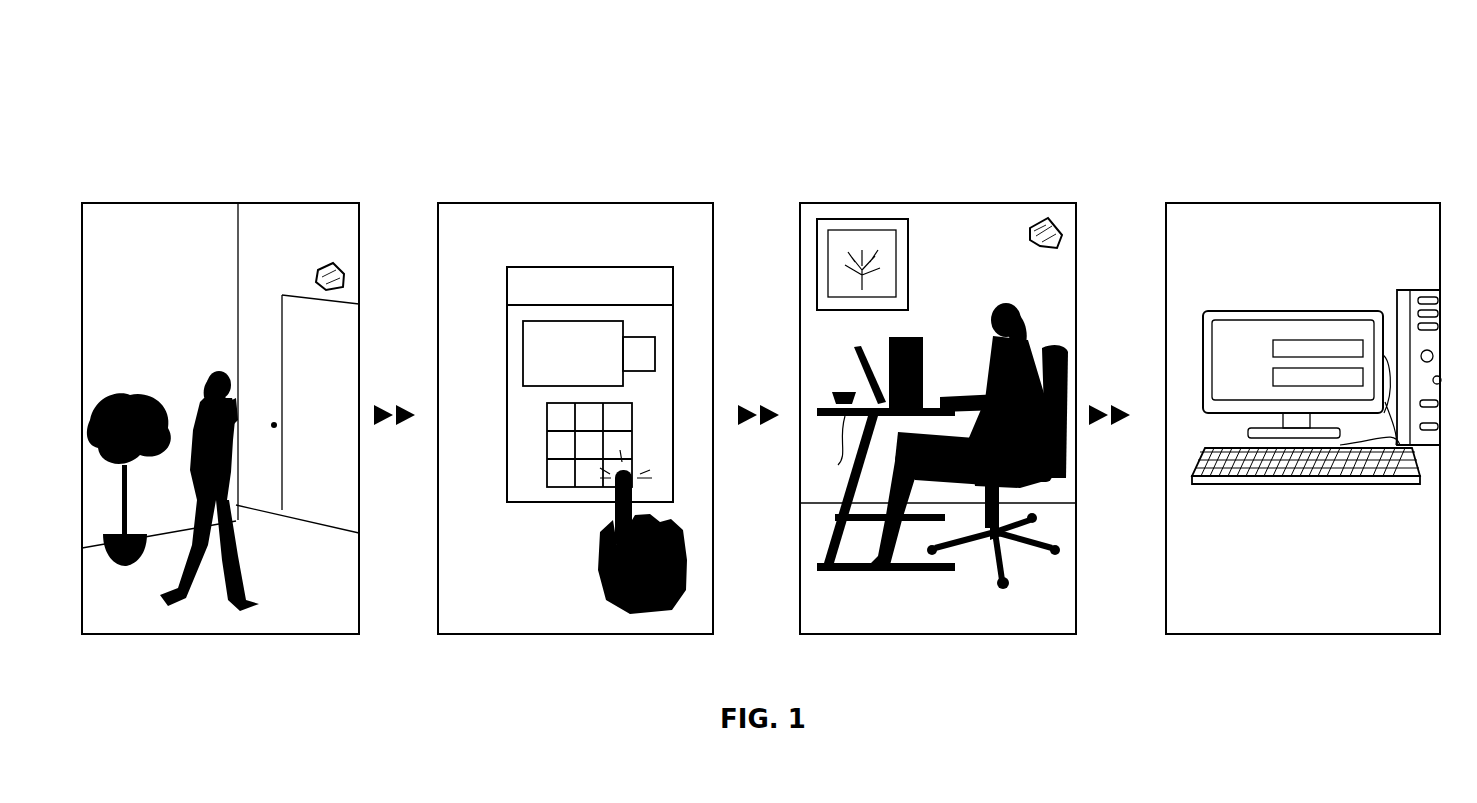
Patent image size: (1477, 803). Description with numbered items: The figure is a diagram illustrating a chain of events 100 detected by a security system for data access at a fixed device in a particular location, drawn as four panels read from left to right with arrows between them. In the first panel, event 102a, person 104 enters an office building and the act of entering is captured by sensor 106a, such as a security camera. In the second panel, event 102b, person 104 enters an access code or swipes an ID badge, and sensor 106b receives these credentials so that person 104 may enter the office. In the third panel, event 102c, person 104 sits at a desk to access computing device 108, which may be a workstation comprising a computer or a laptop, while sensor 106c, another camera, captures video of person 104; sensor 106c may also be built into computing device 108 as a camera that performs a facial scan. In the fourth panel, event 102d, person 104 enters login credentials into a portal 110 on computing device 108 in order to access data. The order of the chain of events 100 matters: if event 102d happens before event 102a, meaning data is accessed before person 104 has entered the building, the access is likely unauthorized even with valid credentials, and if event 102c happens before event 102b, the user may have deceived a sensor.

The chain of events 100 is at (760, 41).
The event 102a is at (231, 203).
The event 102b is at (568, 203).
The event 102c is at (925, 203).
The event 102d is at (1318, 203).
The person 104 is at (1014, 306).
The sensor 106a is at (317, 275).
The sensor 106b is at (605, 266).
The sensor 106c is at (1058, 232).
The computing device 108 is at (866, 418).
The portal 110 is at (1240, 330).